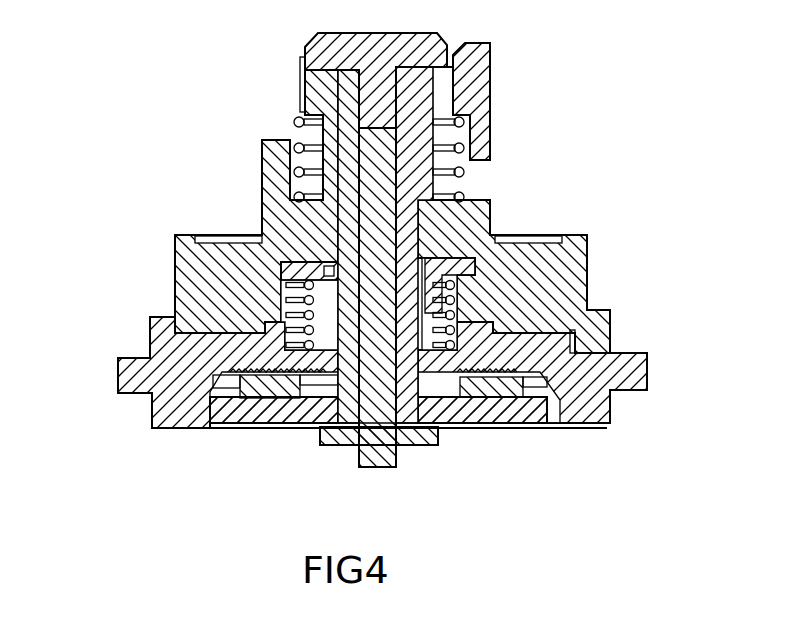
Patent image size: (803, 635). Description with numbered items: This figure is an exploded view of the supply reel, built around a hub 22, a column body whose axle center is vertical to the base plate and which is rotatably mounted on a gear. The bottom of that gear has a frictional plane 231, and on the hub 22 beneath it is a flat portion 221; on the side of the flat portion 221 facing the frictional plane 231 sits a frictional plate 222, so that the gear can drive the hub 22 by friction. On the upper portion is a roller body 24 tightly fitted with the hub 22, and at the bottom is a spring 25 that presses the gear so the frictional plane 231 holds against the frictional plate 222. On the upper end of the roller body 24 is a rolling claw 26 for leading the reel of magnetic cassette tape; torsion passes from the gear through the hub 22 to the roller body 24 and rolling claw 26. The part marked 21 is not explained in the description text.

The shaft end / nut 21 is at (397, 467).
The central shaft 22 is at (405, 206).
The right ring flange 221 is at (483, 414).
The left ring flange 222 is at (153, 418).
The lower housing part 231 is at (547, 330).
The housing 24 is at (175, 240).
The spring 25 is at (303, 312).
The cap 26 is at (490, 92).